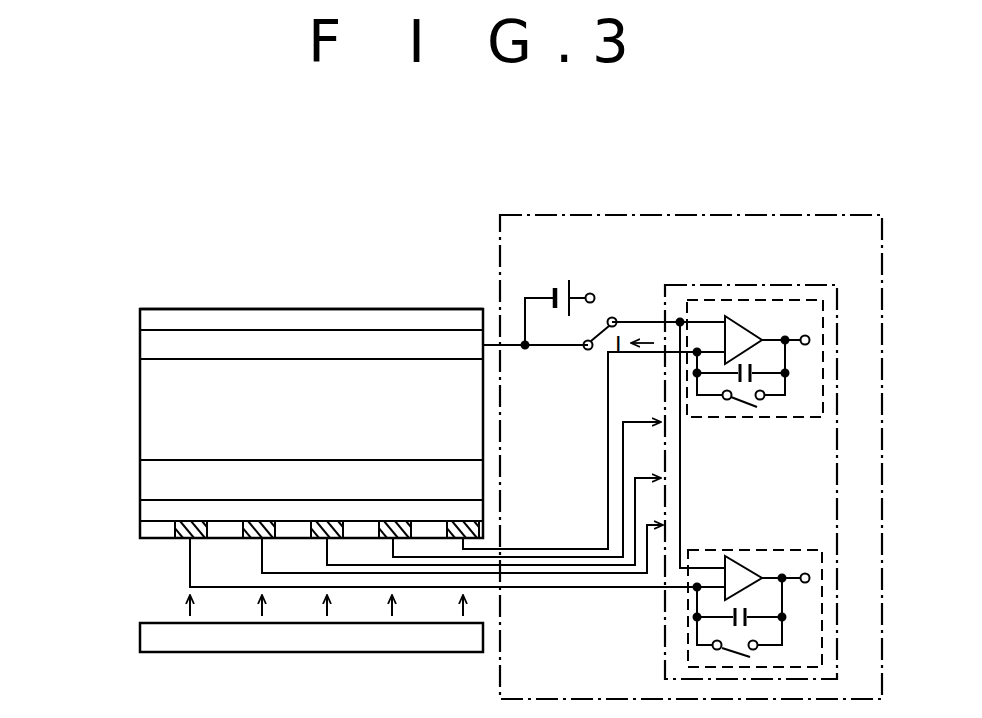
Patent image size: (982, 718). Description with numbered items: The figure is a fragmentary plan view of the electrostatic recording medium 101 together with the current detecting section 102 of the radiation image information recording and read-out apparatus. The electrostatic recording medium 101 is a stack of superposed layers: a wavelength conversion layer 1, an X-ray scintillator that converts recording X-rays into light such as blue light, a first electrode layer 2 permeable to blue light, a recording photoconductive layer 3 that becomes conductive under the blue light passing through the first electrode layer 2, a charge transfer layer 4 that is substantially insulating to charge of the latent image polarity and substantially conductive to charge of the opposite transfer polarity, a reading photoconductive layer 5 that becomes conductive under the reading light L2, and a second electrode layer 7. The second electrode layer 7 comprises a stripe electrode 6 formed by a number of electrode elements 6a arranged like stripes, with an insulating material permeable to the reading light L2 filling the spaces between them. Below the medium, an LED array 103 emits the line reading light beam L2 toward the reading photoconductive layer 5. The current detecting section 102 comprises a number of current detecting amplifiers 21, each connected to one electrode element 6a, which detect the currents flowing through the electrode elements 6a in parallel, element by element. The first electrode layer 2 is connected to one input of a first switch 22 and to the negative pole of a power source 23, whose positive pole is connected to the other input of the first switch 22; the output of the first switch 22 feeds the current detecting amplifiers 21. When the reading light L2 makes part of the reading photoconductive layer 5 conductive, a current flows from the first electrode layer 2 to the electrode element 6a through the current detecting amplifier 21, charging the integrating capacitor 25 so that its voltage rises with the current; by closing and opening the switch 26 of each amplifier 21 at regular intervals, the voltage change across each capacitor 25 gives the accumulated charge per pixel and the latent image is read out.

The wavelength conversion layer 1 is at (147, 316).
The first electrode layer 2 is at (148, 347).
The recording photoconductive layer 3 is at (148, 402).
The charge transfer layer 4 is at (148, 472).
The reading photoconductive layer 5 is at (148, 506).
The second electrode layer 7 is at (147, 534).
The stripe electrode 6 is at (273, 550).
The electrode elements 6a is at (187, 540).
The electrostatic recording medium 101 is at (121, 376).
The current detecting section 102 is at (756, 215).
The LED array 103 is at (140, 640).
The reading light L2 is at (195, 605).
The current detecting amplifier 21 is at (758, 453).
The first switch 22 is at (602, 312).
The power source 23 is at (560, 276).
The integrating capacitor 25 is at (762, 380).
The switch 26 is at (747, 411).